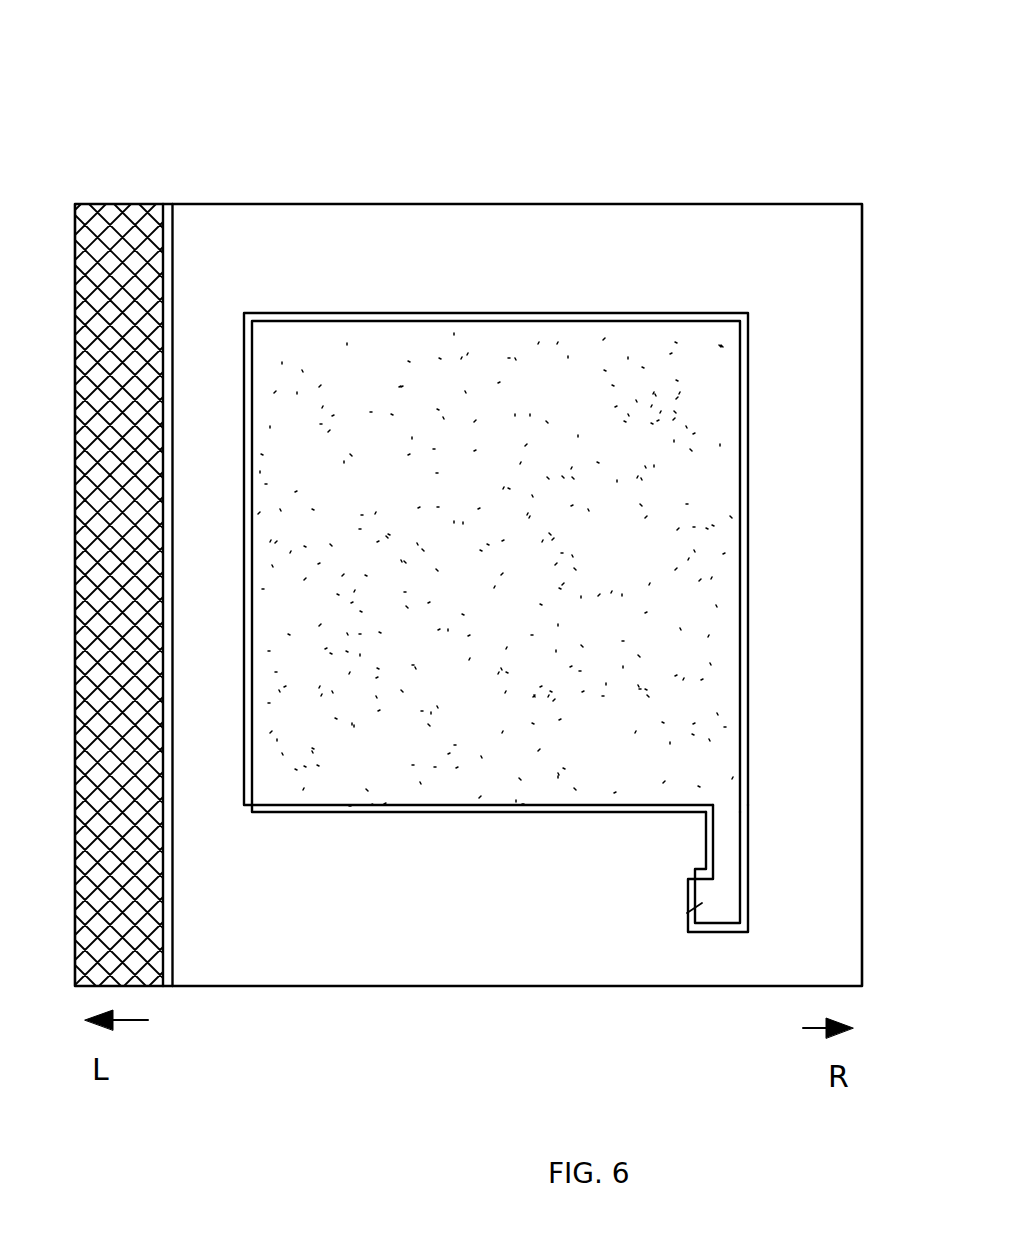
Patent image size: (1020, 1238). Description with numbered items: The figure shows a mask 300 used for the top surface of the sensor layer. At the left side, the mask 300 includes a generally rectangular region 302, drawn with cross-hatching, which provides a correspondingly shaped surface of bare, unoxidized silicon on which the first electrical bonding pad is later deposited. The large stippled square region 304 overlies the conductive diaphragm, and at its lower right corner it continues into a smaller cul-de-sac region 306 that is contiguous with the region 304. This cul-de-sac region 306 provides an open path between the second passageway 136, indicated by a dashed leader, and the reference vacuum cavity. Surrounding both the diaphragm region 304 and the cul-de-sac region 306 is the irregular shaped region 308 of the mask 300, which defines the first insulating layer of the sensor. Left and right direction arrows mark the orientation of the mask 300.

The mask 300 is at (734, 70).
The generally rectangular region 302 is at (113, 238).
The region 304 is at (510, 357).
The cul-de-sac region 306 is at (725, 840).
The irregular shaped region 308 is at (292, 248).
The second passageway 136 is at (687, 913).